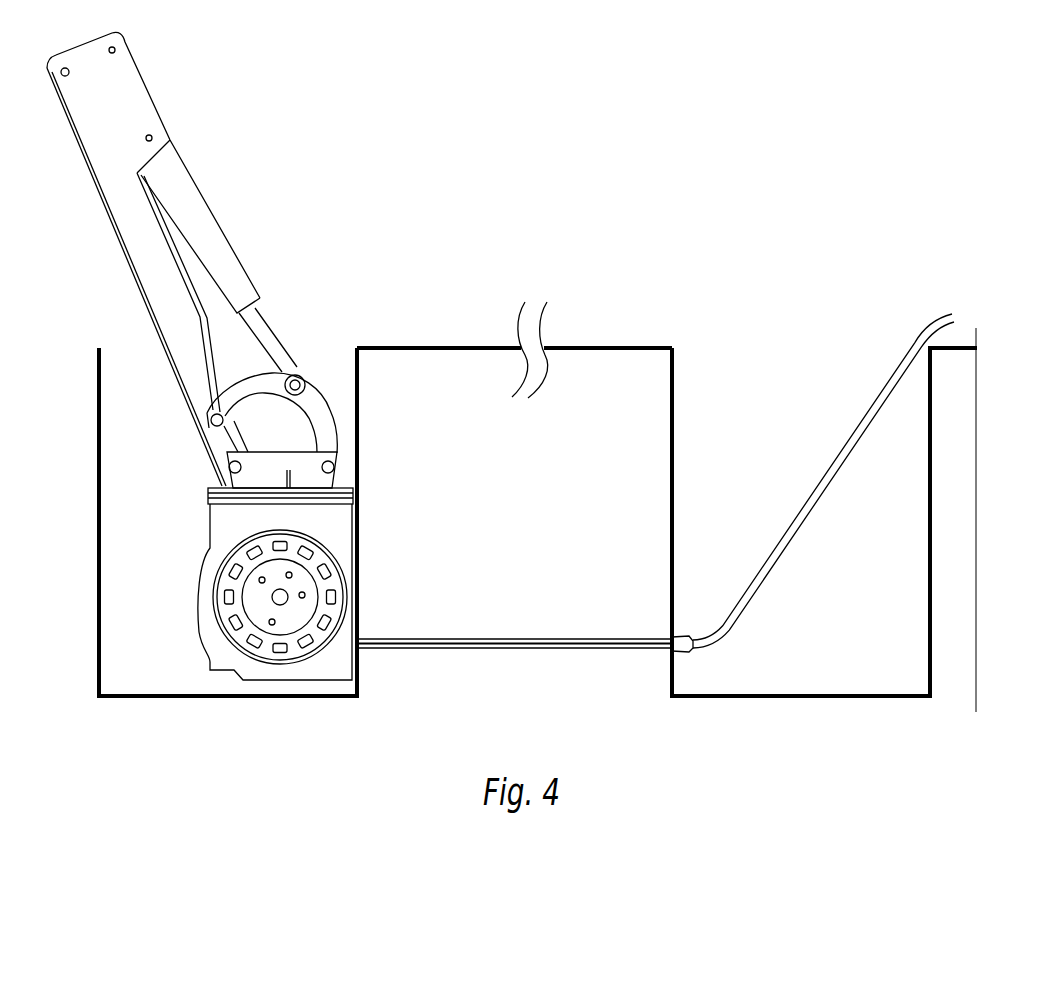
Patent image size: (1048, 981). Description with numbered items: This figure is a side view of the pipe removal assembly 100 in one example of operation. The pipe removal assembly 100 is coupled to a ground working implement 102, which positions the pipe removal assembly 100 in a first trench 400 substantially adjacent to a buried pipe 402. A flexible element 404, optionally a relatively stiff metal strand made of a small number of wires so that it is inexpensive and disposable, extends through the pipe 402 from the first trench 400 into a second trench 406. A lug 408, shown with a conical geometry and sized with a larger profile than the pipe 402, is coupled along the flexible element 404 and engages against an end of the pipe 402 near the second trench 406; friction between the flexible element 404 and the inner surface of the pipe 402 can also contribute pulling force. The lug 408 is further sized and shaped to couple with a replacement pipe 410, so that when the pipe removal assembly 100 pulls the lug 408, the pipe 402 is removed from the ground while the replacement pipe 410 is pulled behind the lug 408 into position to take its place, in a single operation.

The pipe removal assembly 100 is at (178, 668).
The ground working implement 102 is at (180, 177).
The first trench 400 is at (150, 549).
The pipe 402 is at (447, 648).
The flexible element 404 is at (530, 643).
The second trench 406 is at (888, 558).
The lug 408 is at (685, 650).
The replacement pipe 410 is at (810, 503).